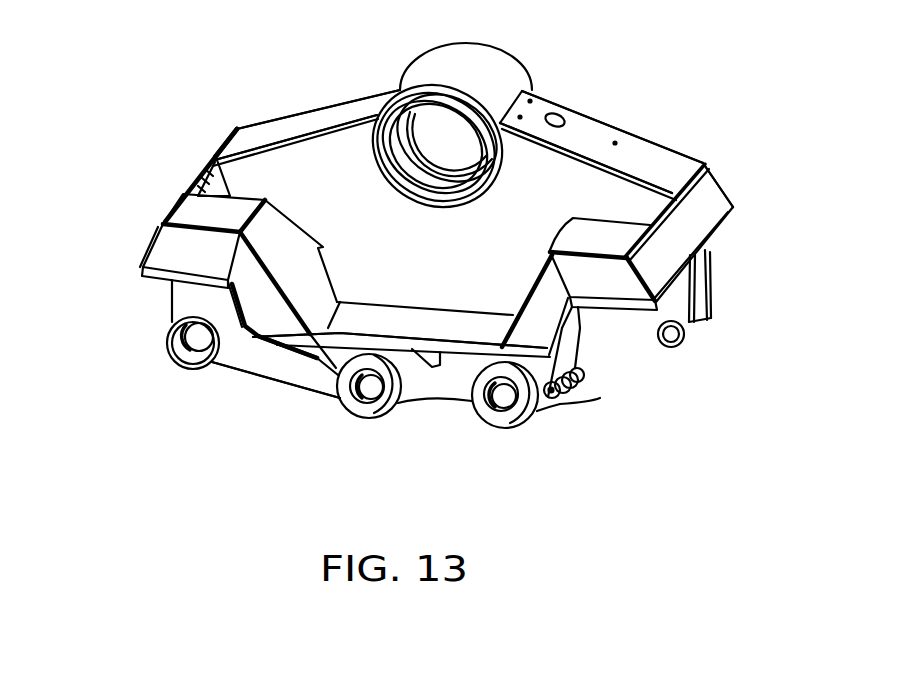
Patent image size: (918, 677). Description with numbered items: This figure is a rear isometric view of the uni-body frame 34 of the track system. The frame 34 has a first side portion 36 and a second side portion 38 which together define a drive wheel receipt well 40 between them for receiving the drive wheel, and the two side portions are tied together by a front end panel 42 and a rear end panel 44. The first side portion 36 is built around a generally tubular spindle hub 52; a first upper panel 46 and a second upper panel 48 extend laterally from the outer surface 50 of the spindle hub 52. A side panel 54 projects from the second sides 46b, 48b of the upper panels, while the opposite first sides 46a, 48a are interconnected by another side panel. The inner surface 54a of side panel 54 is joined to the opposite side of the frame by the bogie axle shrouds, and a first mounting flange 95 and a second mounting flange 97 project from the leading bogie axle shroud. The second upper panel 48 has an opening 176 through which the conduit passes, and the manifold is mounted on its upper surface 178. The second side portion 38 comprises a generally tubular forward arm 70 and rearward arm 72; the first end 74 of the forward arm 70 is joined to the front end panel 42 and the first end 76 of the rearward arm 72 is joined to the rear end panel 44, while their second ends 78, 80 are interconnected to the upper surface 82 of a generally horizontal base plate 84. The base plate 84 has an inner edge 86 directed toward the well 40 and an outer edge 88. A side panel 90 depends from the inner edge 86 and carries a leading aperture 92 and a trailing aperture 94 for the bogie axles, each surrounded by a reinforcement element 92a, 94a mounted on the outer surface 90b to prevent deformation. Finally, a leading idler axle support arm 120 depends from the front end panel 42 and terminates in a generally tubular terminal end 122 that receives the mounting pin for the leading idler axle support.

The frame 34 is at (164, 429).
The first side portion 36 is at (240, 133).
The second side portion 38 is at (178, 218).
The drive wheel receipt well 40 is at (250, 173).
The front end panel 42 is at (708, 222).
The rear end panel 44 is at (200, 173).
The first upper panel 46 is at (353, 104).
The first side of first upper panel 46a is at (296, 114).
The second side of first upper panel 46b is at (312, 135).
The second upper panel 48 is at (581, 121).
The first side of second upper panel 48a is at (614, 122).
The second side of second upper panel 48b is at (561, 147).
The outer surface of spindle hub 50 is at (504, 97).
The spindle hub 52 is at (436, 53).
The side panel 54 is at (414, 235).
The inner surface of side panel 54a is at (332, 226).
The forward arm 70 is at (618, 290).
The rearward arm 72 is at (178, 250).
The first end of forward arm 74 is at (702, 217).
The first end of rearward arm 76 is at (185, 212).
The second end of forward arm 78 is at (538, 410).
The second end of rearward arm 80 is at (257, 357).
The upper surface of base plate 82 is at (347, 317).
The base plate 84 is at (280, 327).
The inner edge of base plate 86 is at (395, 305).
The outer edge of base plate 88 is at (327, 327).
The side panel 90 is at (450, 388).
The outer surface of side panel 90b is at (467, 358).
The leading aperture 92 is at (483, 405).
The reinforcement element 92a is at (510, 417).
The trailing aperture 94 is at (353, 397).
The reinforcement element 94a is at (375, 407).
The first mounting flange 95 is at (567, 368).
The second mounting flange 97 is at (563, 403).
The leading idler axle support arm 120 is at (704, 300).
The terminal end 122 is at (677, 347).
The opening 176 is at (548, 110).
The upper surface of second upper panel 178 is at (672, 175).